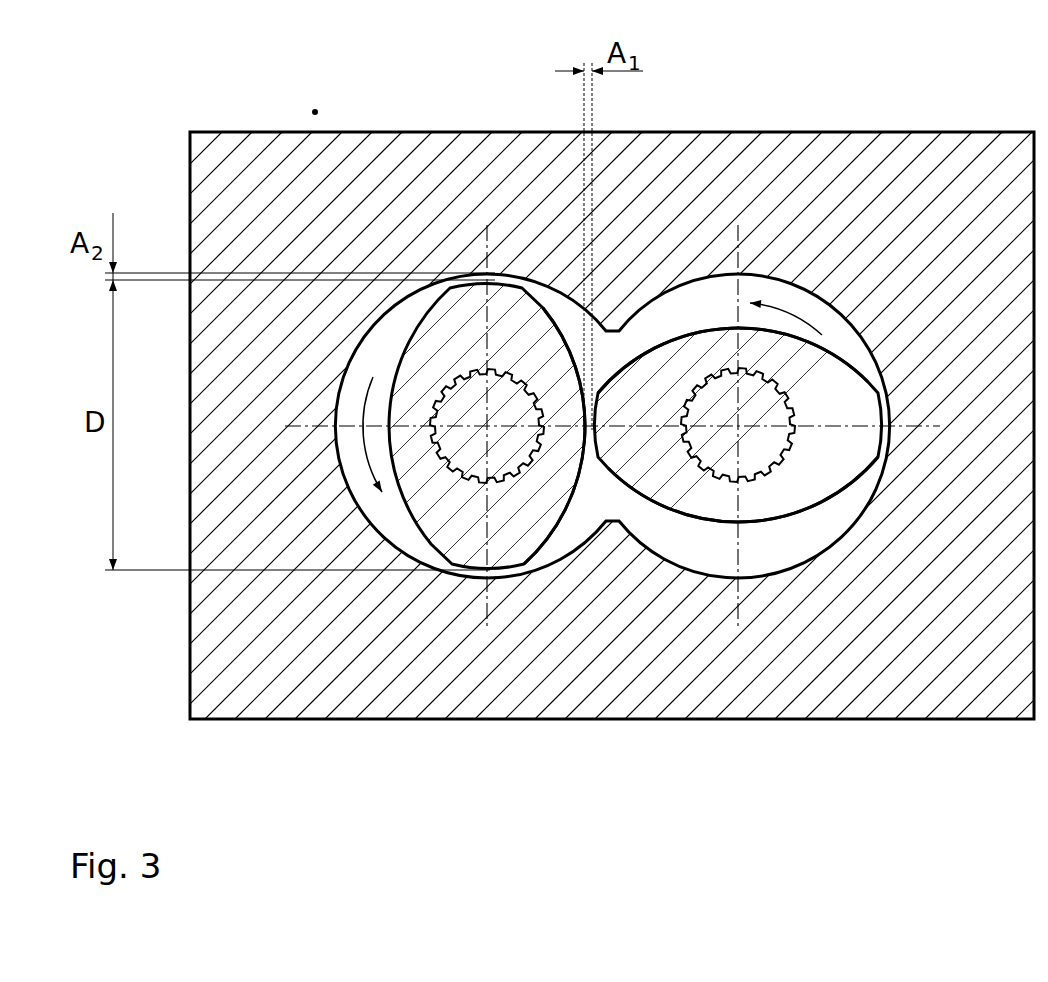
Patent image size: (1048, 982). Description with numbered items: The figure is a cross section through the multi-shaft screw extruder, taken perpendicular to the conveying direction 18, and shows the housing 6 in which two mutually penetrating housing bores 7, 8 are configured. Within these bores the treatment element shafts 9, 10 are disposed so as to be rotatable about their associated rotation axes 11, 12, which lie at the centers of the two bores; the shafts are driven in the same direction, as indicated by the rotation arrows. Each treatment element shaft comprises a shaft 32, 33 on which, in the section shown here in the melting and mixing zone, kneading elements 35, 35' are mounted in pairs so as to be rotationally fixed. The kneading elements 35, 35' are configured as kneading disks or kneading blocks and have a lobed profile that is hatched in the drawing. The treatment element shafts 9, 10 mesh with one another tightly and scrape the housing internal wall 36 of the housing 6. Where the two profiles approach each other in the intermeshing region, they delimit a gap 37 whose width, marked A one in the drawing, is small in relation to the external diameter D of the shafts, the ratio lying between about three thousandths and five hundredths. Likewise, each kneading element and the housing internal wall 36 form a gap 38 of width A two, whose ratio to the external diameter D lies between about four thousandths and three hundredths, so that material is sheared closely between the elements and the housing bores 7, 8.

The housing 6 is at (657, 131).
The housing bore 7 is at (397, 320).
The housing bore 8 is at (718, 290).
The treatment element shaft 9 is at (418, 533).
The treatment element shaft 10 is at (745, 528).
The rotation axis 11 is at (462, 478).
The rotation axis 12 is at (768, 472).
The conveying direction 18 is at (315, 110).
The shaft 32 is at (495, 482).
The shaft 33 is at (778, 447).
The kneading element 35 is at (523, 483).
The kneading element 35' is at (743, 645).
The housing internal wall 36 is at (853, 342).
The gap 37 is at (588, 432).
The gap 38 is at (493, 270).